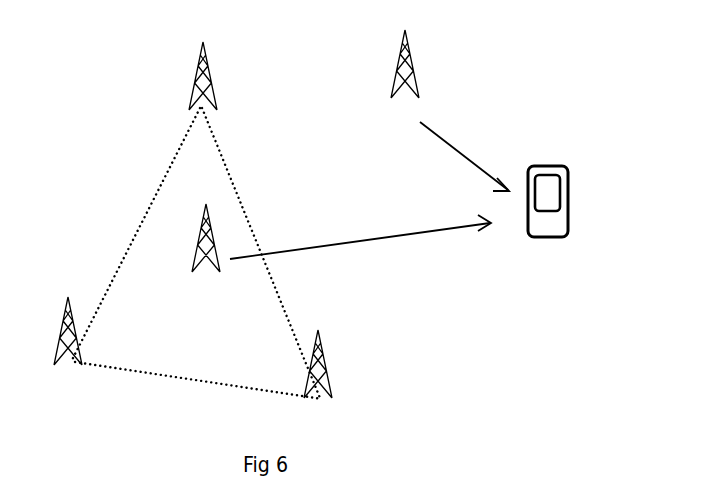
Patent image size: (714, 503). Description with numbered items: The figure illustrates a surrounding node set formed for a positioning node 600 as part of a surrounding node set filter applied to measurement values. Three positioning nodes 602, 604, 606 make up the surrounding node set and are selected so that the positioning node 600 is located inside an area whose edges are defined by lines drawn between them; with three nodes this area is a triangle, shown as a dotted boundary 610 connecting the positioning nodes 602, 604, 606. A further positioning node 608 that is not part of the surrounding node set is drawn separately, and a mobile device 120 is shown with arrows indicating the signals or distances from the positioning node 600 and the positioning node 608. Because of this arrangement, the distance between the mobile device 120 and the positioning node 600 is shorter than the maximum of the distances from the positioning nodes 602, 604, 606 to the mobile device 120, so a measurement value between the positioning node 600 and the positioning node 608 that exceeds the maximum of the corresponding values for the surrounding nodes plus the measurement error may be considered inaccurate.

The positioning node 602 is at (212, 74).
The positioning node 608 is at (414, 64).
The positioning node 600 is at (215, 233).
The coverage region (dotted triangle) 610 is at (230, 165).
The positioning node 604 is at (78, 330).
The positioning node 606 is at (328, 362).
The mobile device 120 is at (568, 185).